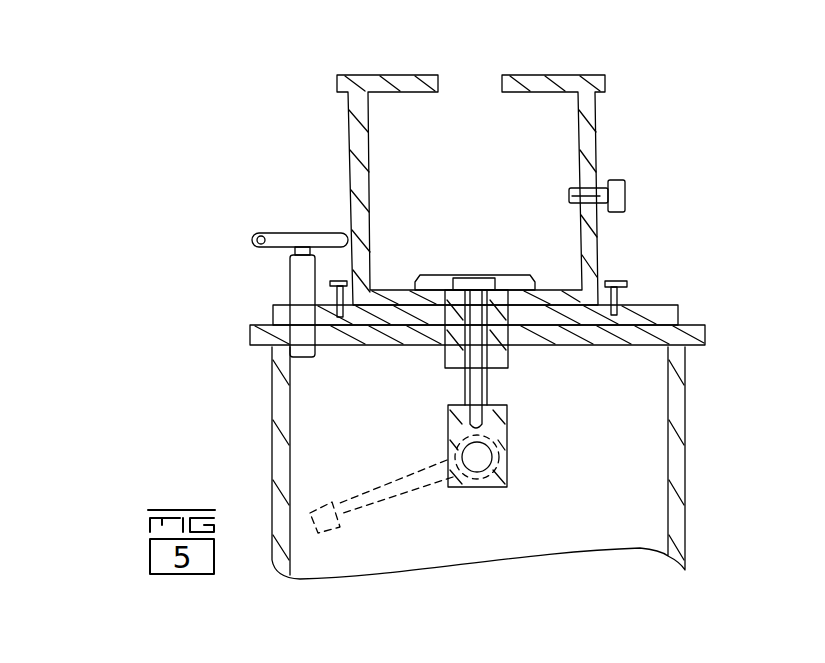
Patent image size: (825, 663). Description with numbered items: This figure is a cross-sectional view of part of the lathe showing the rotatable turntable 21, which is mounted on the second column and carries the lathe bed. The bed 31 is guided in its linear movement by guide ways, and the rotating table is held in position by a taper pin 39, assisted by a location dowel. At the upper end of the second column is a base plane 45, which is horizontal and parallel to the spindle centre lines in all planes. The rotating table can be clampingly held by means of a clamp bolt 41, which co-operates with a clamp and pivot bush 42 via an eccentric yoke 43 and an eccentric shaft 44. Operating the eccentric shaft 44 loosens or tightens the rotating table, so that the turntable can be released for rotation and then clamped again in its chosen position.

The rotatable turntable 21 is at (658, 255).
The bed 31 is at (592, 114).
The taper pin 39 is at (303, 282).
The clamp bolt 41 is at (479, 392).
The clamp and pivot bush 42 is at (510, 358).
The eccentric yoke 43 is at (507, 408).
The eccentric shaft 44 is at (509, 458).
The base plane 45 is at (691, 325).